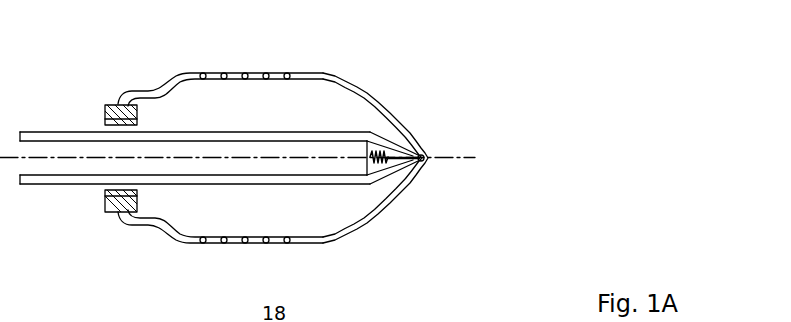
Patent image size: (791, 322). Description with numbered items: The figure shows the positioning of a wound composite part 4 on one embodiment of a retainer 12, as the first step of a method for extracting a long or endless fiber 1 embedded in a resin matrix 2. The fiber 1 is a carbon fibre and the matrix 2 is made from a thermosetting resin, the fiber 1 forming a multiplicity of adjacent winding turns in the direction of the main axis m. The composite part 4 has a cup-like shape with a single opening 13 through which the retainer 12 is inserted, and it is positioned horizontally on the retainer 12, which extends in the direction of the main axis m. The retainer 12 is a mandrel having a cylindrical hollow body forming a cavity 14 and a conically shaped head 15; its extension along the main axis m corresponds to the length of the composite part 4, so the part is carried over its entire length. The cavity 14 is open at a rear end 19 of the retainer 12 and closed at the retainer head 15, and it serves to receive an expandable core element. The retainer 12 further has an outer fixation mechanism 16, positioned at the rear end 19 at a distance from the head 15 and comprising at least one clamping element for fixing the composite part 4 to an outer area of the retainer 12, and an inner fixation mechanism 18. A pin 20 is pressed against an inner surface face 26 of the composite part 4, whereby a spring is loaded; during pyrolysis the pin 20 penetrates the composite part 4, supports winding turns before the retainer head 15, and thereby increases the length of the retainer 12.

The long fiber 1 is at (290, 73).
The resin matrix 2 is at (364, 92).
The wound composite part 4 is at (273, 130).
The retainer 12 is at (195, 123).
The opening 13 is at (120, 107).
The cavity 14 is at (252, 150).
The retainer head 15 is at (379, 146).
The outer fixation mechanism 16 is at (112, 220).
The inner fixation mechanism 18 is at (390, 191).
The rear end 19 is at (88, 131).
The pin 20 is at (423, 155).
The inner surface face 26 is at (418, 166).
The main axis m is at (467, 157).